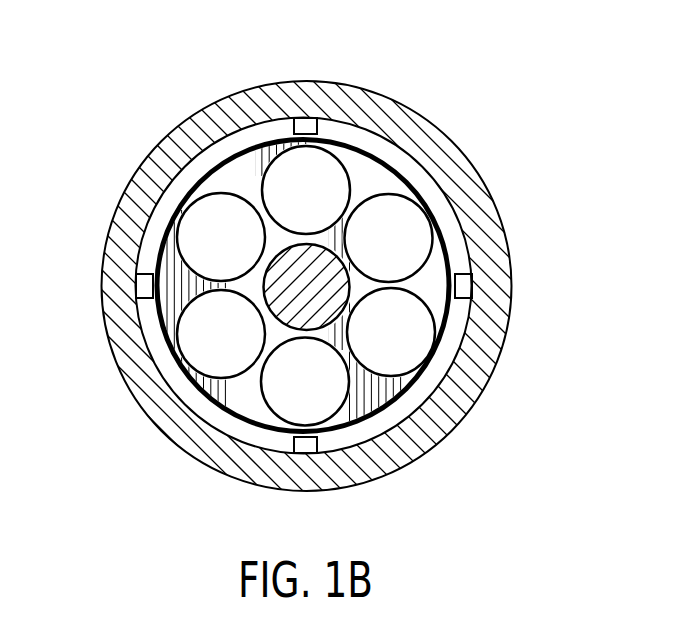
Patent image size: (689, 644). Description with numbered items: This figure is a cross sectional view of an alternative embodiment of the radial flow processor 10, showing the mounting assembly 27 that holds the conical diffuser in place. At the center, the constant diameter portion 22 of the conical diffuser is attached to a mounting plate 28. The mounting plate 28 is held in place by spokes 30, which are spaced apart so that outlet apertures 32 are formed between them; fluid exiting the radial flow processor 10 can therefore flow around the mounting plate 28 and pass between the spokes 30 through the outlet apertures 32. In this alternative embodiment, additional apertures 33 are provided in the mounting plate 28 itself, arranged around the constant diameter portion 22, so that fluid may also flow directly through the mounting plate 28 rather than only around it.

The radial flow processor 10 is at (103, 88).
The constant diameter portion 22 is at (330, 270).
The mounting assembly 27 is at (389, 151).
The mounting plate 28 is at (240, 400).
The spokes 30 is at (305, 122).
The outlet apertures 32 is at (447, 215).
The apertures 33 is at (282, 170).